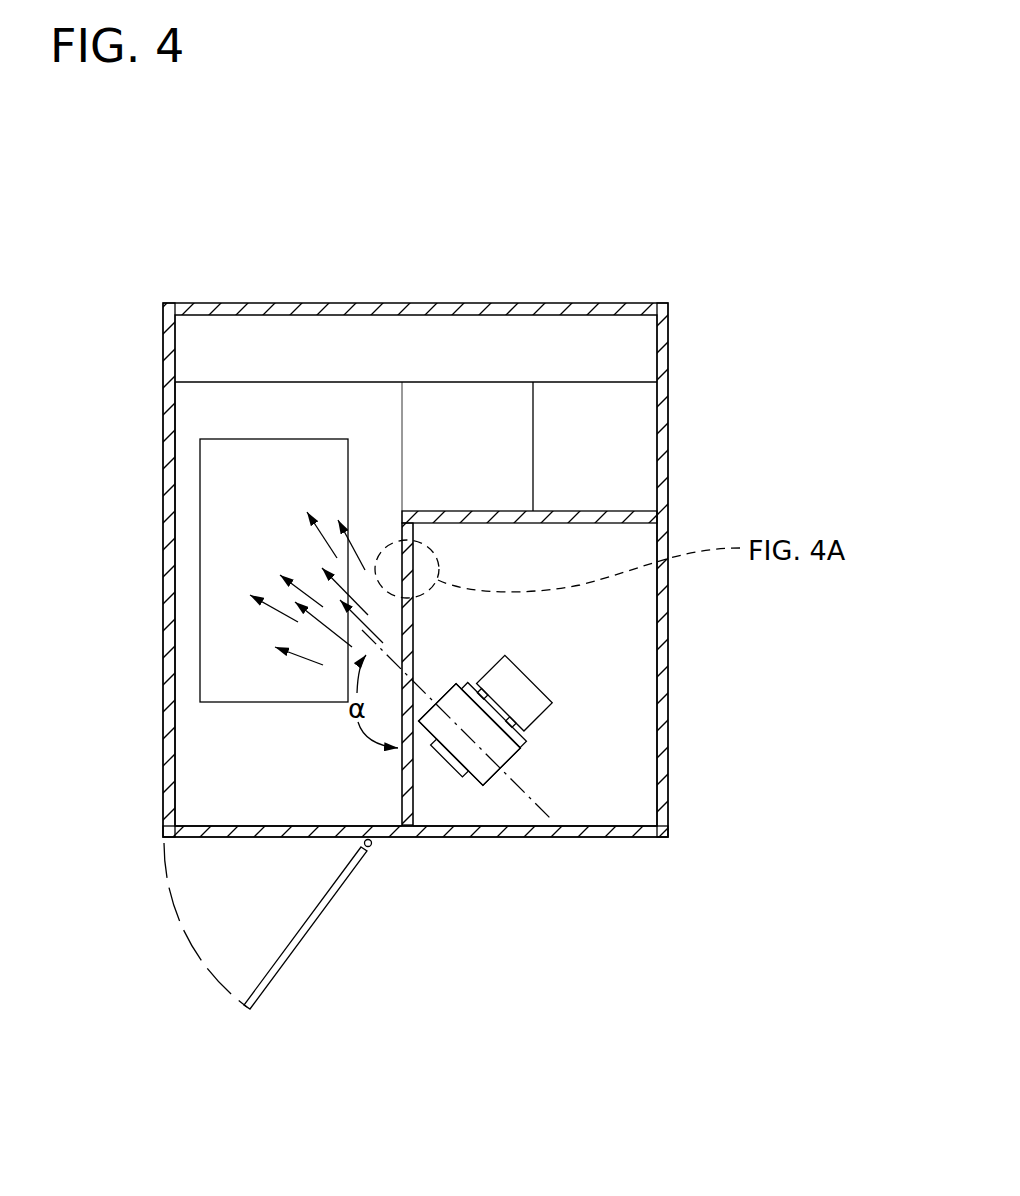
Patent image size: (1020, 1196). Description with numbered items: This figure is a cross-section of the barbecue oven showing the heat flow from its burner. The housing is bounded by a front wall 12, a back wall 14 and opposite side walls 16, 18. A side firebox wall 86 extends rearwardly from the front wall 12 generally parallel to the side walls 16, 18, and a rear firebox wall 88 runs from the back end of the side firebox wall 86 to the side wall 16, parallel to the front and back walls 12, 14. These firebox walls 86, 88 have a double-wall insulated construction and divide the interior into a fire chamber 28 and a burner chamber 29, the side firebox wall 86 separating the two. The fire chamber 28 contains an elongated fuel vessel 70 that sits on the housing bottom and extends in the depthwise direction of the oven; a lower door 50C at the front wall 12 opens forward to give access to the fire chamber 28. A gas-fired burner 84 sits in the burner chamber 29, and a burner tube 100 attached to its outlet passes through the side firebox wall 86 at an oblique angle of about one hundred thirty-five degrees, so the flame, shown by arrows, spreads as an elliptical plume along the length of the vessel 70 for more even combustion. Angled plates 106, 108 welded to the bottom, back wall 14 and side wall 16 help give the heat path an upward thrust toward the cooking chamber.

The front wall 12 is at (523, 838).
The back wall 14 is at (417, 303).
The side wall 16 is at (668, 677).
The side wall 18 is at (163, 640).
The fire chamber 28 is at (267, 758).
The burner chamber 29 is at (620, 790).
The lower door 50C is at (268, 978).
The fuel vessel 70 is at (200, 574).
The burner 84 is at (510, 772).
The side firebox wall 86 is at (415, 793).
The rear firebox wall 88 is at (571, 510).
The burner tube 100 is at (427, 672).
The angled plate 106 is at (240, 349).
The angled plate 108 is at (593, 435).